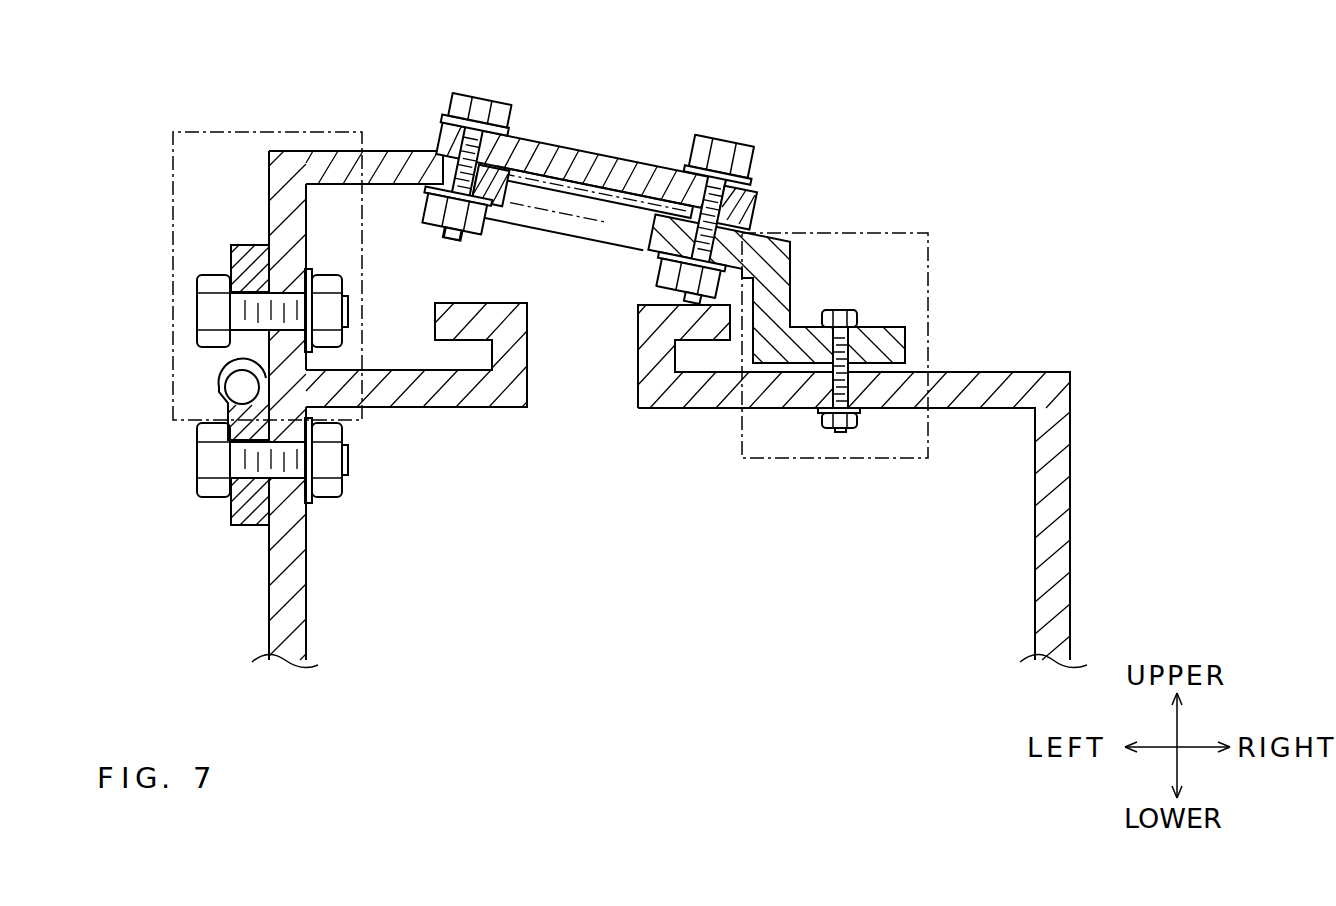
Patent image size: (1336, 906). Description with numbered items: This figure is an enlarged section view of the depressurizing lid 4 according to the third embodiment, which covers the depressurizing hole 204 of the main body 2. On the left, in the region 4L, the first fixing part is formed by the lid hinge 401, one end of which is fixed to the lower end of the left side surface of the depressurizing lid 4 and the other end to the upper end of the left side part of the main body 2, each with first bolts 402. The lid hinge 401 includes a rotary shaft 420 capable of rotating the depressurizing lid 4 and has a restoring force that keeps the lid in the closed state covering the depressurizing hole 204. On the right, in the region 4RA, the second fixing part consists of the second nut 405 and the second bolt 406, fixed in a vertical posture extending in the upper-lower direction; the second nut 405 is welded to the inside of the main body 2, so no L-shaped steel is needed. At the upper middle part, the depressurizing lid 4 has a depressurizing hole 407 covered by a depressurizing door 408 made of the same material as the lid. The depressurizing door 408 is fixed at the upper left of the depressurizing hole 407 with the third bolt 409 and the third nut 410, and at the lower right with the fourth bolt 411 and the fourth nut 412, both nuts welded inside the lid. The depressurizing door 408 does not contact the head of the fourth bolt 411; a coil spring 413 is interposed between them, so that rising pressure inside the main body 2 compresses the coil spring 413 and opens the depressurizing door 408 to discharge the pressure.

The depressurizing lid 4 is at (176, 84).
The region 4L is at (173, 166).
The region 4RA is at (928, 308).
The main body 2 is at (249, 603).
The first bolt 402 is at (204, 311).
The lid hinge 401 is at (223, 390).
The rotary shaft 420 is at (240, 387).
The depressurizing door 408 is at (556, 150).
The depressurizing hole 407 is at (556, 248).
The third bolt 409 is at (485, 96).
The third nut 410 is at (443, 190).
The fourth bolt 411 is at (728, 134).
The coil spring 413 is at (748, 190).
The fourth nut 412 is at (657, 268).
The depressurizing hole 204 is at (642, 358).
The second bolt 406 is at (842, 318).
The second nut 405 is at (853, 430).